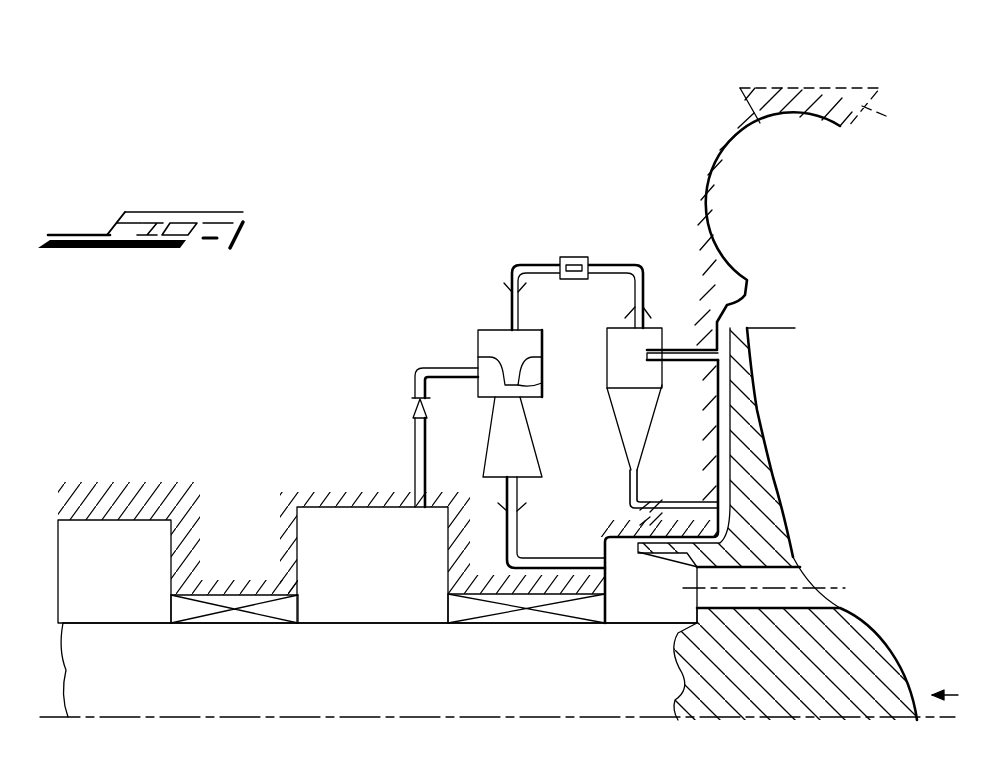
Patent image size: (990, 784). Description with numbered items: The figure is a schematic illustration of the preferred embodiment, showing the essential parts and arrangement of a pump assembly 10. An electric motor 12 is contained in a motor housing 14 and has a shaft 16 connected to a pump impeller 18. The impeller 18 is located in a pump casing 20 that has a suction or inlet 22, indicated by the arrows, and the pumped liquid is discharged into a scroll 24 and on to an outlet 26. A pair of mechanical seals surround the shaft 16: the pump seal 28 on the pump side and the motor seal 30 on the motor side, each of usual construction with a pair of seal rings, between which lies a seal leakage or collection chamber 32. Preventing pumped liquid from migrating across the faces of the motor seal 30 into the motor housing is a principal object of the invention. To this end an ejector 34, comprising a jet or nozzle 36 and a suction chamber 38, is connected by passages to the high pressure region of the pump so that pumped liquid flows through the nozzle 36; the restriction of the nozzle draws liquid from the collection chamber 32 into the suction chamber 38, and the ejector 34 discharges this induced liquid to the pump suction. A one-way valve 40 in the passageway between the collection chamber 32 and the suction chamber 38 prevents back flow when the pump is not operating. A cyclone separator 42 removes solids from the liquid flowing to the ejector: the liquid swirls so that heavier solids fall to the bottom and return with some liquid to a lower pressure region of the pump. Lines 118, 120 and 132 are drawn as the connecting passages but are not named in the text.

The pump assembly 10 is at (283, 444).
The electric motor 12 is at (150, 560).
The motor housing 14 is at (122, 498).
The shaft 16 is at (136, 689).
The pump impeller 18 is at (862, 640).
The pump casing 20 is at (732, 148).
The suction or inlet 22 is at (965, 689).
The scroll 24 is at (812, 118).
The outlet 26 is at (830, 107).
The pump seal 28 is at (494, 626).
The motor seal 30 is at (280, 630).
The seal leakage or collection chamber 32 is at (370, 618).
The ejector 34 is at (516, 388).
The jet or nozzle 36 is at (540, 386).
The suction chamber 38 is at (490, 392).
The one-way valve 40 is at (412, 412).
The cyclone separator 42 is at (625, 421).
The motive fluid supply line 118 is at (568, 260).
The discharge line 120 is at (520, 556).
The suction line 132 is at (448, 368).